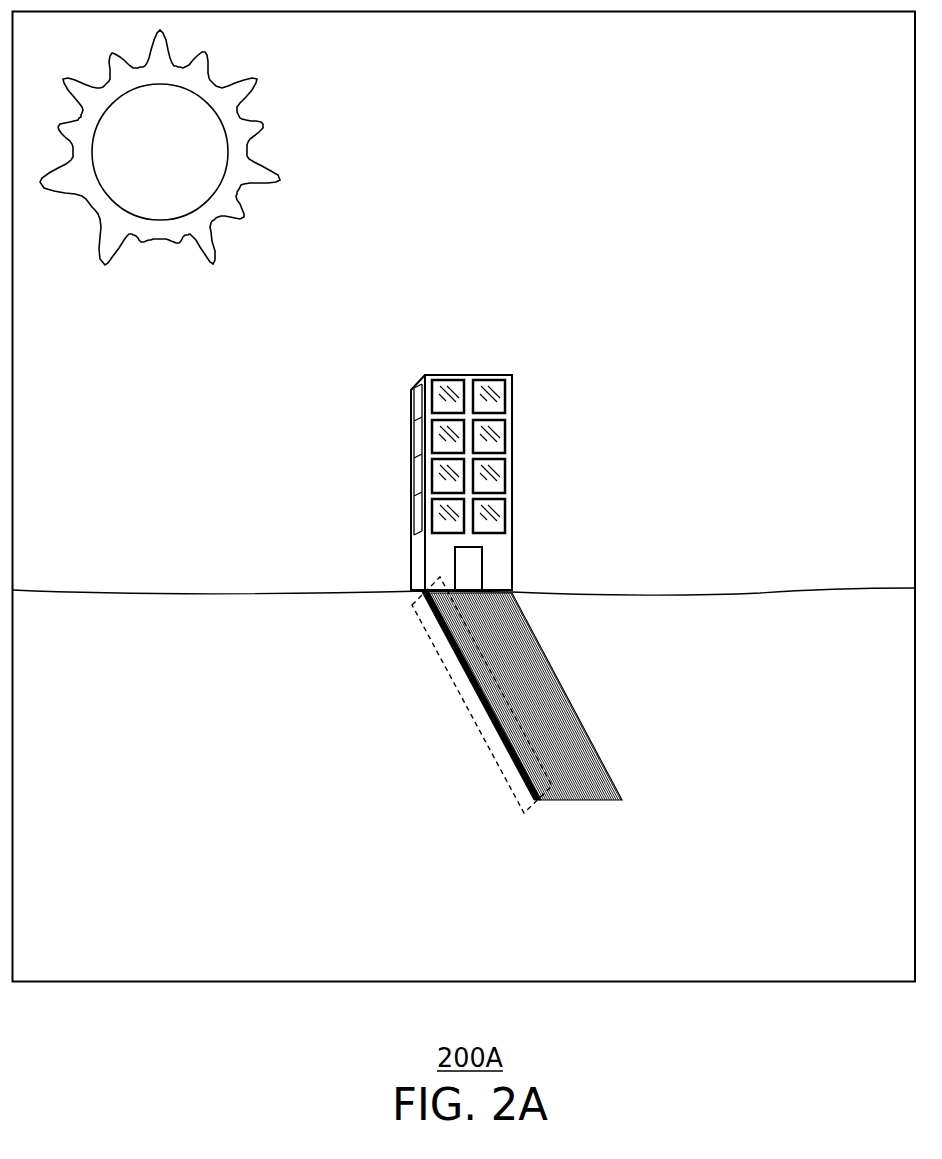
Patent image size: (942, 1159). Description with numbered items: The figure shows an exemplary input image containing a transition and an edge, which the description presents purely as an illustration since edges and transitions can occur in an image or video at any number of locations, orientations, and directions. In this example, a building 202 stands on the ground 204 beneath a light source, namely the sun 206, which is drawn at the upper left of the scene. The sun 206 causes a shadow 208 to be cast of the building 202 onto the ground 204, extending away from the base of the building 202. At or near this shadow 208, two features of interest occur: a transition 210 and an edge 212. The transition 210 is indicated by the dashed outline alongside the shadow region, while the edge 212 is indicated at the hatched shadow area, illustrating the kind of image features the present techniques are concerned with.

The building 202 is at (512, 404).
The ground surface 204 is at (765, 588).
The sun 206 is at (160, 147).
The shadow 208 is at (589, 826).
The transition 210 is at (473, 722).
The edge 212 is at (557, 676).